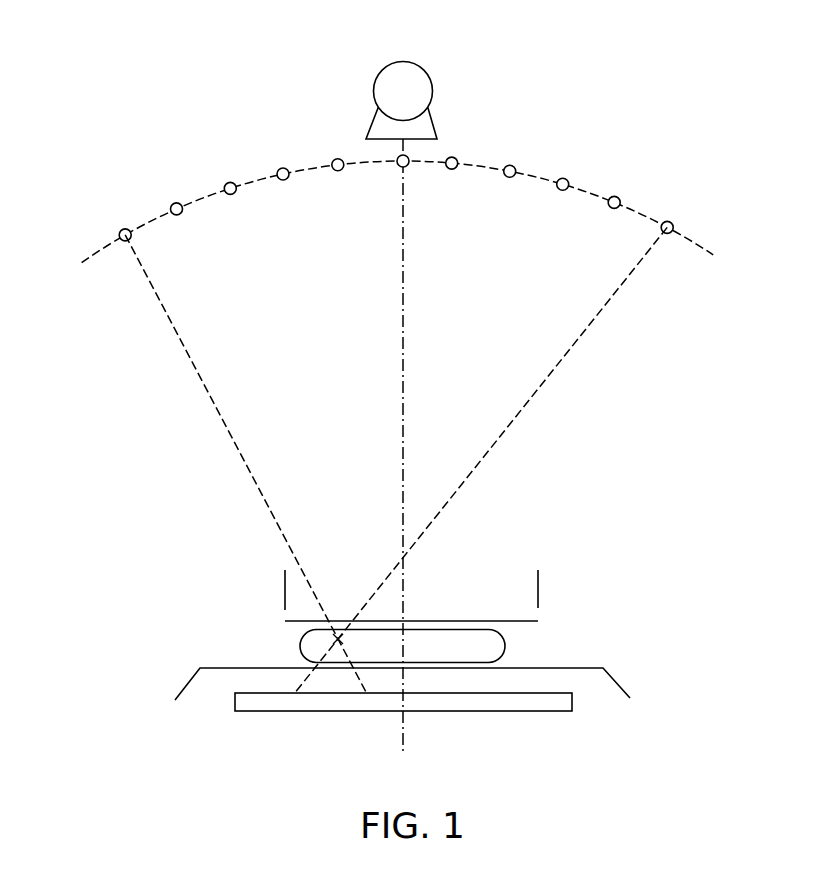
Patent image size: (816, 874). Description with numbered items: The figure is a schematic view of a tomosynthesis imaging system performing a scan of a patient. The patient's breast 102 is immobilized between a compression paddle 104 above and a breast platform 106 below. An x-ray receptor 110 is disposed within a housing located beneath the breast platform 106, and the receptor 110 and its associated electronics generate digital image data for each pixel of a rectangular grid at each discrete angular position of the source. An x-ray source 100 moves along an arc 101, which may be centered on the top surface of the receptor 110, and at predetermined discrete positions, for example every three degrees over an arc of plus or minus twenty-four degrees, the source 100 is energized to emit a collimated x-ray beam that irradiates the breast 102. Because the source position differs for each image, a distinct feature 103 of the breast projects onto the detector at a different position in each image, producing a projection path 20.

The x-ray source 100 is at (403, 61).
The arc 101 is at (92, 251).
The breast 102 is at (507, 644).
The distinct feature 103 is at (335, 640).
The compression paddle 104 is at (541, 589).
The breast platform 106 is at (184, 680).
The x-ray receptor 110 is at (500, 703).
The projection path 20 is at (326, 694).